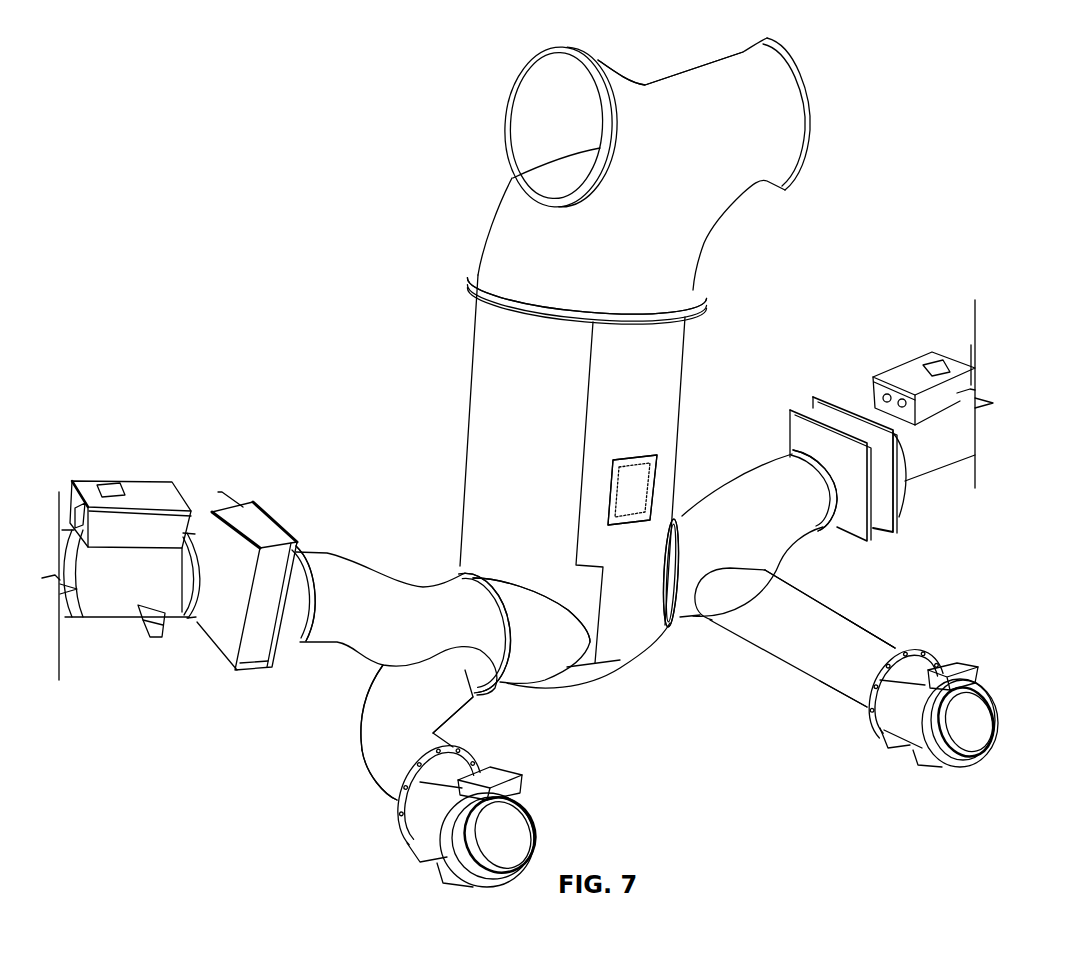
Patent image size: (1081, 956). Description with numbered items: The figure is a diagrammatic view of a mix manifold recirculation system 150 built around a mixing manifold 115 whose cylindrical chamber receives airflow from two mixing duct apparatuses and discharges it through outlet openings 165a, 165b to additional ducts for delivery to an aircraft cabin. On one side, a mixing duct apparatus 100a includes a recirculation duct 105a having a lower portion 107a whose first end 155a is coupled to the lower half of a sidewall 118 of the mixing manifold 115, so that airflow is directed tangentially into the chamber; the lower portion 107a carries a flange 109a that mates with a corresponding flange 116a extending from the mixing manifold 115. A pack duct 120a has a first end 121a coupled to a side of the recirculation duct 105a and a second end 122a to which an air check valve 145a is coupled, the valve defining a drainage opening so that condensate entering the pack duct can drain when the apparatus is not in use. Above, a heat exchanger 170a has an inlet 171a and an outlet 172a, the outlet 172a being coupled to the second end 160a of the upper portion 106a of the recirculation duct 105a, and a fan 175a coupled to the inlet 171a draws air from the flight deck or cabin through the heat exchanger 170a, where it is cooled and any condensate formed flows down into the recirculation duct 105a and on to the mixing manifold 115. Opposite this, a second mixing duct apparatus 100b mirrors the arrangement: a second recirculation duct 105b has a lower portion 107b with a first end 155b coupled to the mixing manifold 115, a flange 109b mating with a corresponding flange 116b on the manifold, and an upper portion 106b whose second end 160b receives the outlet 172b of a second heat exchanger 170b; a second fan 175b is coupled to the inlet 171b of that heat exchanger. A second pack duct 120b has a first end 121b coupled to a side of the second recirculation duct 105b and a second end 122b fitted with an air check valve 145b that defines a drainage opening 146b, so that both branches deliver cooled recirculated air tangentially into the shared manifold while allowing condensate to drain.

The system 150 is at (193, 181).
The outlet opening 165a is at (513, 178).
The outlet opening 165b is at (795, 138).
The lower portion 107b is at (688, 560).
The first end 155b is at (678, 173).
The mixing manifold 115 is at (492, 348).
The sidewall 118 is at (519, 518).
The inlet 171a is at (208, 522).
The outlet 172a is at (307, 513).
The upper portion 106a is at (323, 553).
The second end 160a is at (287, 508).
The flange 109a is at (465, 573).
The flange 116a is at (438, 560).
The fan 175a is at (130, 488).
The heat exchanger 170a is at (250, 510).
The recirculation duct 105a is at (440, 600).
The second fan 175b is at (918, 372).
The outlet 172b is at (800, 465).
The upper portion 106b is at (790, 455).
The second end 160b is at (789, 448).
The second recirculation duct 105b is at (745, 507).
The inlet 171b is at (897, 480).
The second heat exchanger 170b is at (880, 525).
The air check valve 145b is at (958, 662).
The first end 121b is at (707, 602).
The second pack duct 120b is at (790, 650).
The second end 122b is at (860, 700).
The drainage opening 146b is at (962, 762).
The second mixing duct apparatus 100b is at (722, 770).
The flange 109b is at (670, 628).
The flange 116b is at (653, 624).
The lower portion 107a is at (493, 630).
The first end 155a is at (531, 675).
The first end 121a is at (473, 697).
The mixing duct apparatus 100a is at (262, 716).
The pack duct 120a is at (355, 745).
The second end 122a is at (392, 795).
The air check valve 145a is at (413, 847).